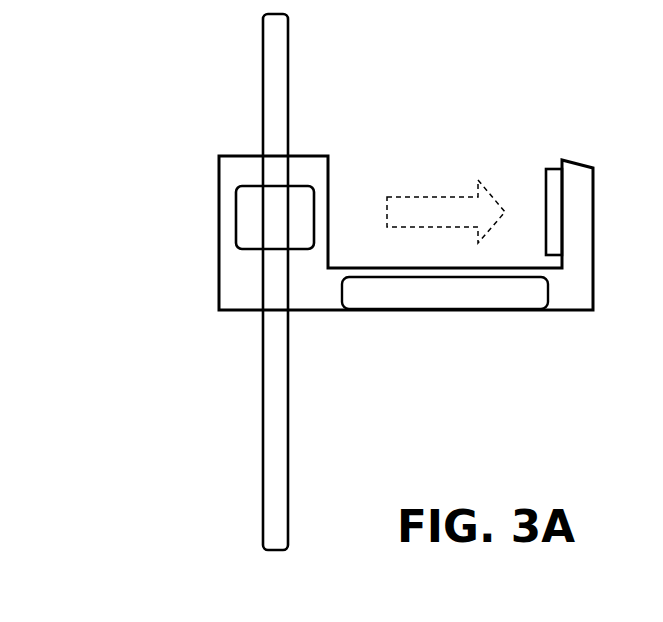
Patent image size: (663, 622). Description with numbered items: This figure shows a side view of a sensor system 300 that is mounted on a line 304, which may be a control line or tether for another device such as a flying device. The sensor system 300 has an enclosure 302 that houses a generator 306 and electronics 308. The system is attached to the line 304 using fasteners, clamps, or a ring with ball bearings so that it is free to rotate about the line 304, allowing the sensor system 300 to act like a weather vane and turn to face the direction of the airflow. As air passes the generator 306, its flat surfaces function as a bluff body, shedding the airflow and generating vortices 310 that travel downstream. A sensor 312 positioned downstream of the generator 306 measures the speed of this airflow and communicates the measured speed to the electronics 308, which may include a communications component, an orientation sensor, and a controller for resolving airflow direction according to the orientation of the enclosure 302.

The sensor system 300 is at (132, 63).
The enclosure 302 is at (219, 208).
The line 304 is at (270, 420).
The generator 306 is at (250, 186).
The electronics 308 is at (491, 297).
The vortices 310 is at (443, 198).
The sensor 312 is at (536, 160).